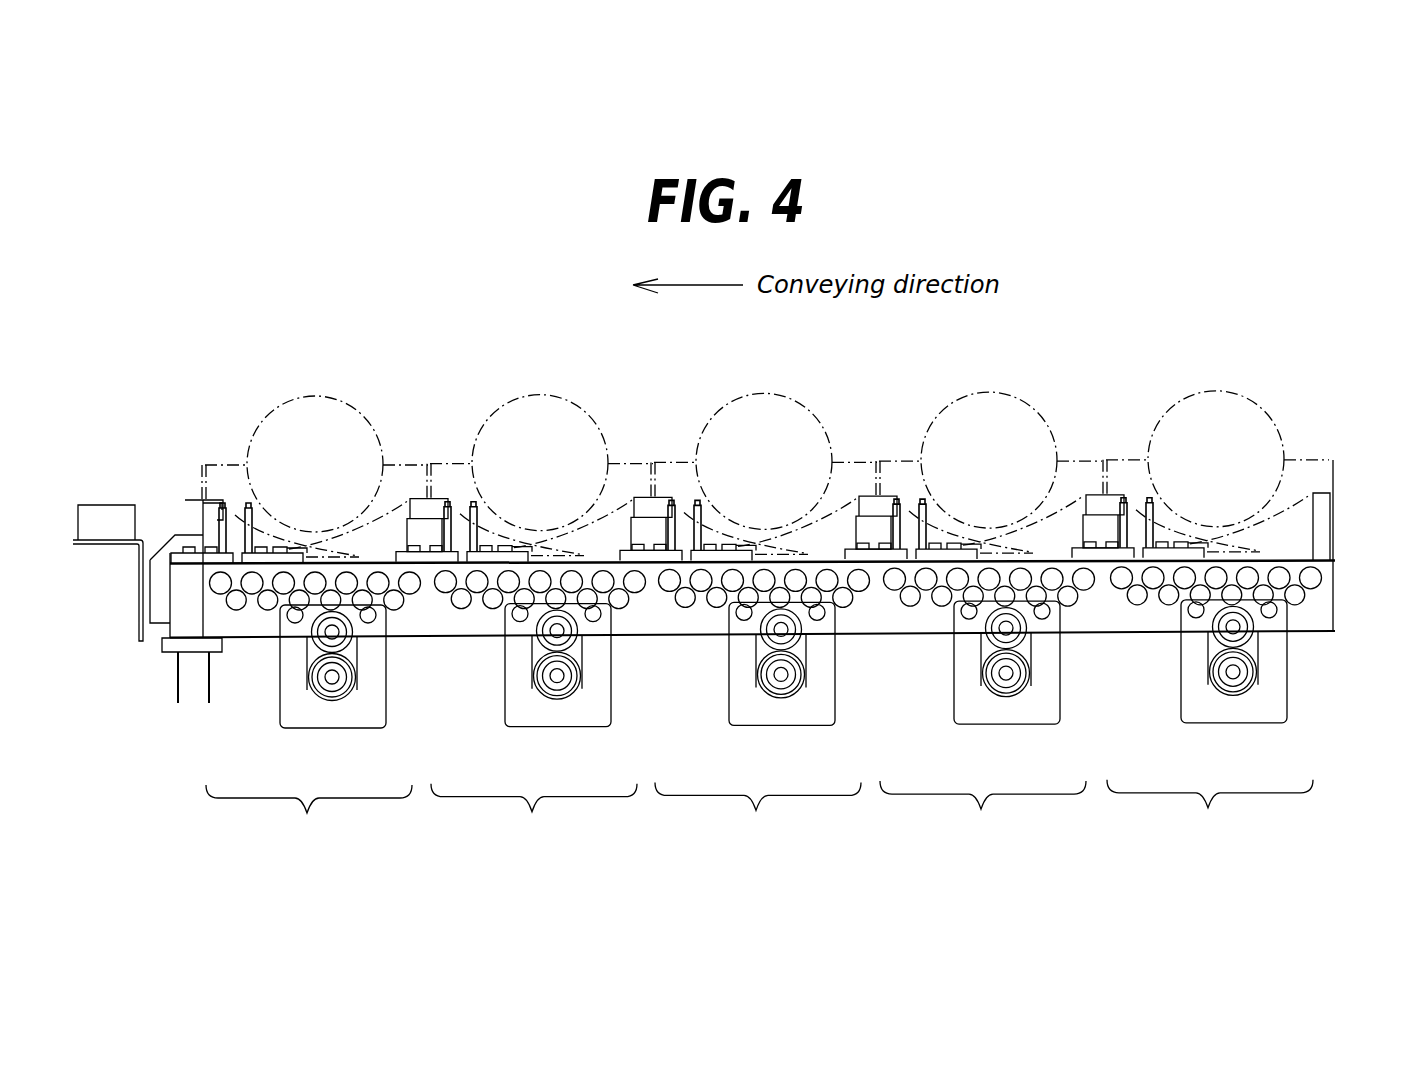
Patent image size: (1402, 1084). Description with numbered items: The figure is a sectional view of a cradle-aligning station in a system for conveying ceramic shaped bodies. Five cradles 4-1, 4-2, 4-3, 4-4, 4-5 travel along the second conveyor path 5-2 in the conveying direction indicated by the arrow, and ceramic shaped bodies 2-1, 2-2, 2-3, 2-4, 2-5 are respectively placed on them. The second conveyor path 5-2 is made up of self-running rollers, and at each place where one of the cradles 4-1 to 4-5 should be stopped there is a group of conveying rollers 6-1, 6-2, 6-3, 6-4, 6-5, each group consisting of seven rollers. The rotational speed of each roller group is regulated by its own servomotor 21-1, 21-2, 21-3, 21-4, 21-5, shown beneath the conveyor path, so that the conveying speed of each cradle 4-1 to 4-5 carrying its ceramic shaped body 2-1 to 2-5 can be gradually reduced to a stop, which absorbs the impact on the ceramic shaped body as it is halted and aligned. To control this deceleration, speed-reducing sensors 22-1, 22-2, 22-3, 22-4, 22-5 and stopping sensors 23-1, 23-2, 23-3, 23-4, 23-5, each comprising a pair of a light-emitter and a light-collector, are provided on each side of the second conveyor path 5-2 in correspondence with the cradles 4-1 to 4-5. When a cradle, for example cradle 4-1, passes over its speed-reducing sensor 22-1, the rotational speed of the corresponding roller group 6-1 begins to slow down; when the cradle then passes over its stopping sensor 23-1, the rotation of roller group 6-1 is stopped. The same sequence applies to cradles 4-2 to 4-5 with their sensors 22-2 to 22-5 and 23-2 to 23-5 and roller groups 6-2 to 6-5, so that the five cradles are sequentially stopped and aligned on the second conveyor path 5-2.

The ceramic shaped body 2-1 is at (338, 420).
The ceramic shaped body 2-2 is at (563, 420).
The ceramic shaped body 2-3 is at (786, 420).
The ceramic shaped body 2-4 is at (1016, 420).
The ceramic shaped body 2-5 is at (1259, 420).
The cradle 4-1 is at (220, 481).
The cradle 4-2 is at (456, 482).
The cradle 4-3 is at (680, 482).
The cradle 4-4 is at (905, 482).
The cradle 4-5 is at (1135, 482).
The second conveyor path 5-2 is at (1345, 560).
The group of conveying rollers 6-1 is at (250, 597).
The group of conveying rollers 6-2 is at (524, 597).
The group of conveying rollers 6-3 is at (748, 597).
The group of conveying rollers 6-4 is at (973, 597).
The group of conveying rollers 6-5 is at (1200, 597).
The servomotor 21-1 is at (348, 695).
The servomotor 21-2 is at (573, 695).
The servomotor 21-3 is at (797, 695).
The servomotor 21-4 is at (1022, 695).
The servomotor 21-5 is at (1249, 695).
The speed-reducing sensor 22-1 is at (247, 522).
The speed-reducing sensor 22-2 is at (477, 522).
The speed-reducing sensor 22-3 is at (701, 522).
The speed-reducing sensor 22-4 is at (926, 522).
The speed-reducing sensor 22-5 is at (1153, 522).
The stopping sensor 23-1 is at (218, 518).
The stopping sensor 23-2 is at (450, 512).
The stopping sensor 23-3 is at (674, 512).
The stopping sensor 23-4 is at (899, 512).
The stopping sensor 23-5 is at (1126, 512).